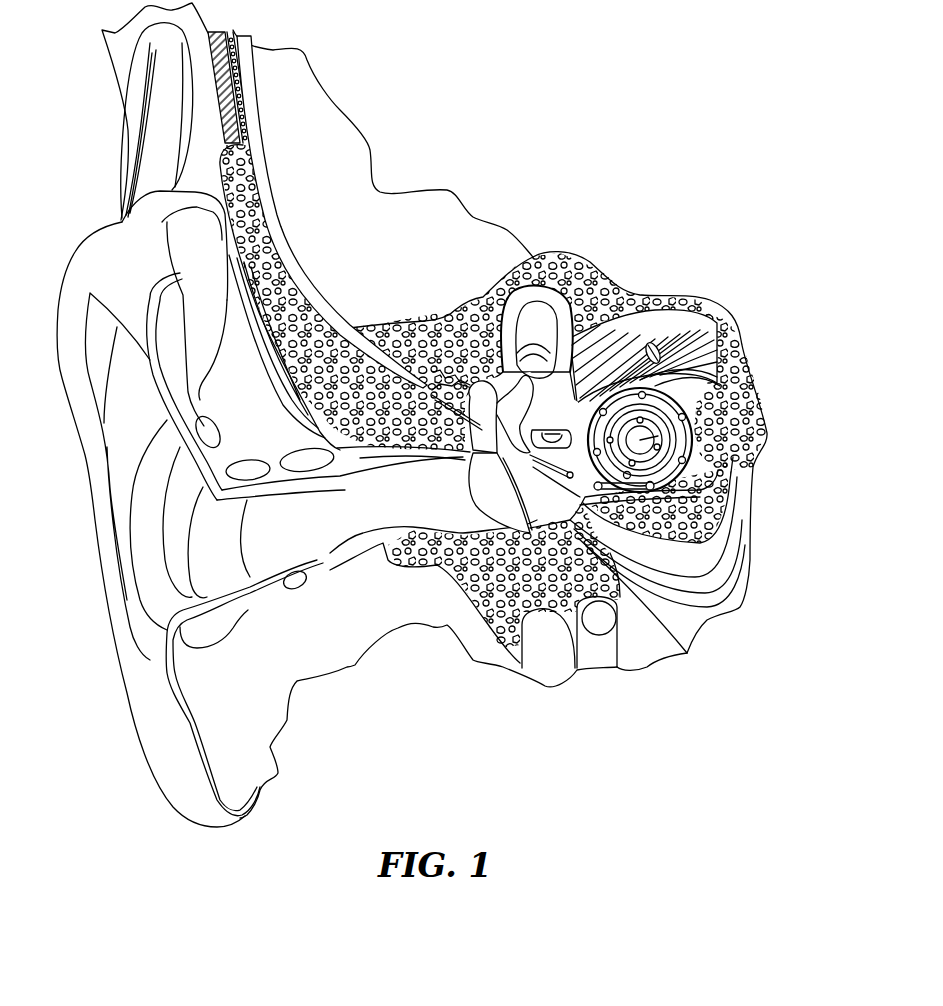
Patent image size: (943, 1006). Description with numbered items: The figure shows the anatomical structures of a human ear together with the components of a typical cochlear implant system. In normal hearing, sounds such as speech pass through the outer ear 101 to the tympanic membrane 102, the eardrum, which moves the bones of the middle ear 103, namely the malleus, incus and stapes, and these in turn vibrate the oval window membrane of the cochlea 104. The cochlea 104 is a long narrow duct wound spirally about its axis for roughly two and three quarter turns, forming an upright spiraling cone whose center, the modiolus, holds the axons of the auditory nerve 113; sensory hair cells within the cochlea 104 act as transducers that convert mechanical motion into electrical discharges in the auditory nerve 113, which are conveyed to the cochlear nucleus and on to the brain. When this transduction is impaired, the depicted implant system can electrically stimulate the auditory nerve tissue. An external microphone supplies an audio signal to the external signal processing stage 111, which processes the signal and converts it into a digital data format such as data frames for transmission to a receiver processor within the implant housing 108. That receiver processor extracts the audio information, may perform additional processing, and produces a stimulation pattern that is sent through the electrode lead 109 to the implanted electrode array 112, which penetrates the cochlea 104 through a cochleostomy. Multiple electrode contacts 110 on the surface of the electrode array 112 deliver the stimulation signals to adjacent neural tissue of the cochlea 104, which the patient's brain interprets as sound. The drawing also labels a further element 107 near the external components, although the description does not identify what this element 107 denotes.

The outer ear 101 is at (149, 421).
The tympanic membrane 102 is at (503, 508).
The bones of the middle ear 103 is at (520, 450).
The cochlea 104 is at (637, 443).
The skin flap 107 is at (155, 146).
The implant housing 108 is at (233, 78).
The electrode lead 109 is at (350, 343).
The electrode contacts 110 is at (683, 460).
The external signal processing stage 111 is at (152, 222).
The implanted electrode array 112 is at (627, 487).
The auditory nerve 113 is at (653, 343).